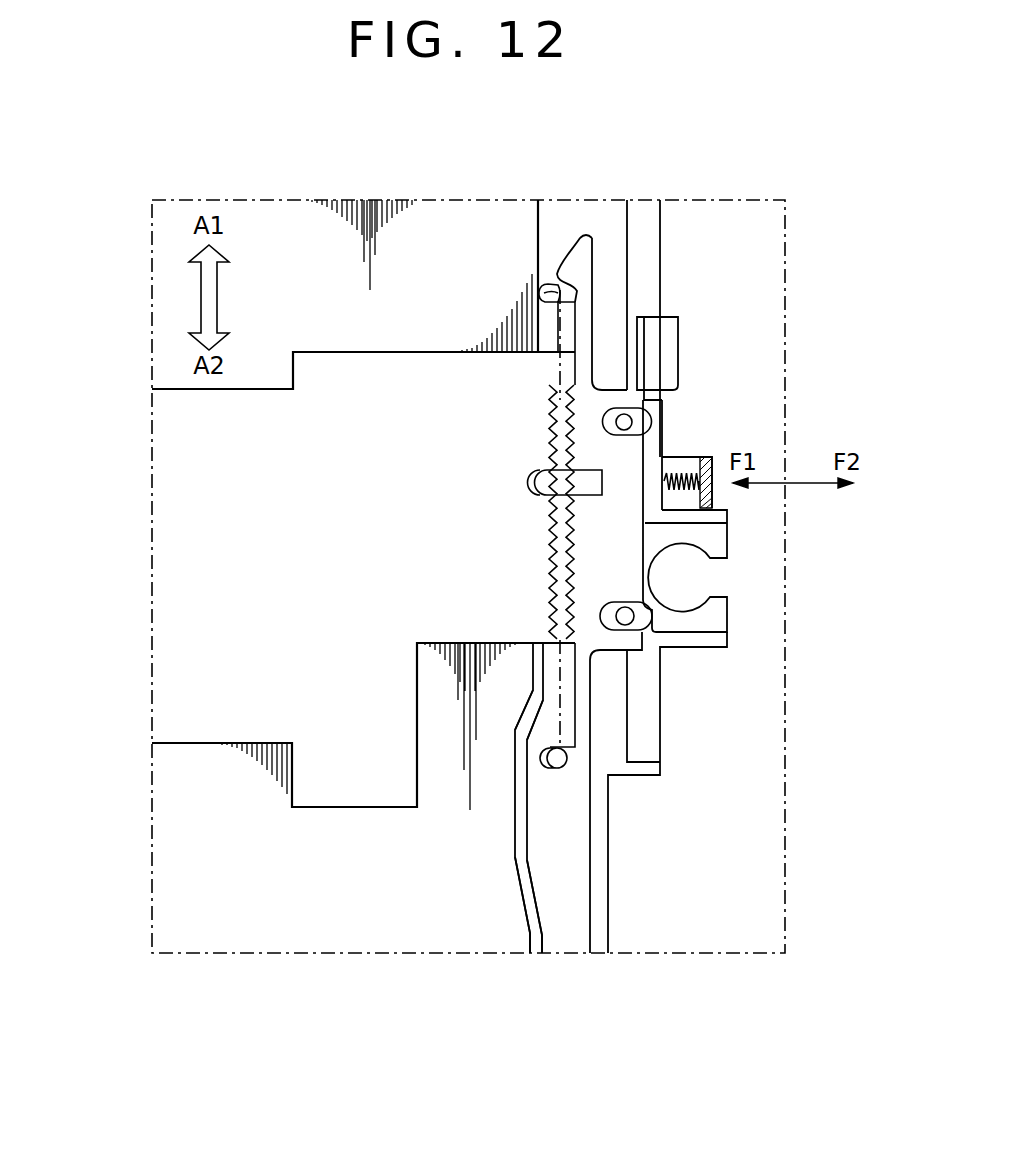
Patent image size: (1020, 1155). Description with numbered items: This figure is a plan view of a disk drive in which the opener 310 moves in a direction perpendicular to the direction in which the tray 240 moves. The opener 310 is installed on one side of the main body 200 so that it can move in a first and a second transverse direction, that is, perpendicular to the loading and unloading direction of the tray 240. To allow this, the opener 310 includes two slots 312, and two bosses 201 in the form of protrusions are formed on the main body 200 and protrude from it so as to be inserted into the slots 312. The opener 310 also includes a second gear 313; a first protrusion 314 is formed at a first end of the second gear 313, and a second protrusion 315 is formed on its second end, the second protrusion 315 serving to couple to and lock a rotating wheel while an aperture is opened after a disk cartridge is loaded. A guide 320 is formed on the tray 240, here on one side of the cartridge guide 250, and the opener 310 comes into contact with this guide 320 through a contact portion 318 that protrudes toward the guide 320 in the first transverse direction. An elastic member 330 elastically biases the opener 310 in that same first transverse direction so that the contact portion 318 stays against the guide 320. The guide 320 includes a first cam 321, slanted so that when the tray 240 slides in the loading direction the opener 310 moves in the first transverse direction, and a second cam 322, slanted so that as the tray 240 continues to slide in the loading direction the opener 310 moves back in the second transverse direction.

The main body 200 is at (662, 245).
The boss 201 is at (632, 422).
The tray 240 is at (172, 477).
The cartridge guide 250 is at (172, 862).
The opener 310 is at (647, 554).
The slot 312 is at (660, 402).
The second gear 313 is at (556, 446).
The first protrusion 314 is at (566, 758).
The second protrusion 315 is at (555, 288).
The contact portion 318 is at (530, 484).
The guide 320 is at (516, 859).
The first cam 321 is at (533, 714).
The second cam 322 is at (535, 890).
The elastic member 330 is at (668, 482).